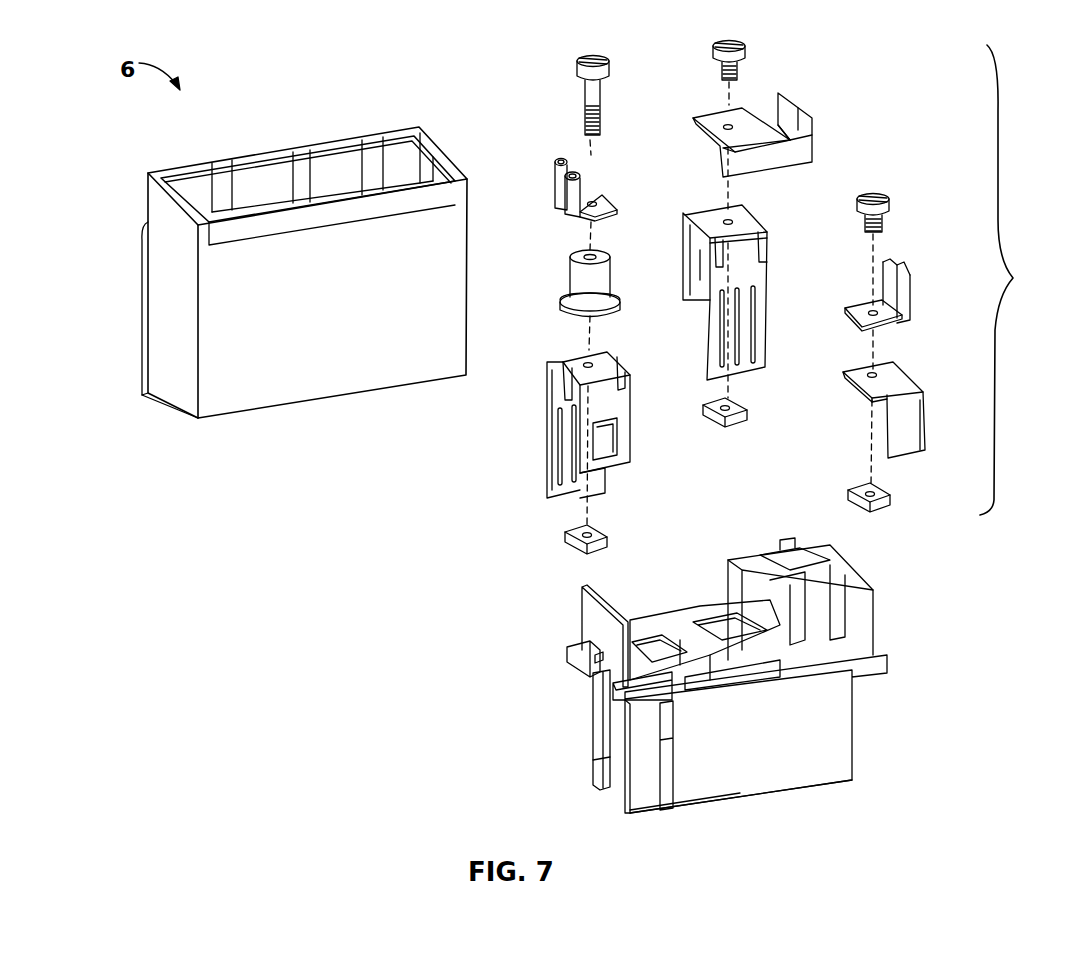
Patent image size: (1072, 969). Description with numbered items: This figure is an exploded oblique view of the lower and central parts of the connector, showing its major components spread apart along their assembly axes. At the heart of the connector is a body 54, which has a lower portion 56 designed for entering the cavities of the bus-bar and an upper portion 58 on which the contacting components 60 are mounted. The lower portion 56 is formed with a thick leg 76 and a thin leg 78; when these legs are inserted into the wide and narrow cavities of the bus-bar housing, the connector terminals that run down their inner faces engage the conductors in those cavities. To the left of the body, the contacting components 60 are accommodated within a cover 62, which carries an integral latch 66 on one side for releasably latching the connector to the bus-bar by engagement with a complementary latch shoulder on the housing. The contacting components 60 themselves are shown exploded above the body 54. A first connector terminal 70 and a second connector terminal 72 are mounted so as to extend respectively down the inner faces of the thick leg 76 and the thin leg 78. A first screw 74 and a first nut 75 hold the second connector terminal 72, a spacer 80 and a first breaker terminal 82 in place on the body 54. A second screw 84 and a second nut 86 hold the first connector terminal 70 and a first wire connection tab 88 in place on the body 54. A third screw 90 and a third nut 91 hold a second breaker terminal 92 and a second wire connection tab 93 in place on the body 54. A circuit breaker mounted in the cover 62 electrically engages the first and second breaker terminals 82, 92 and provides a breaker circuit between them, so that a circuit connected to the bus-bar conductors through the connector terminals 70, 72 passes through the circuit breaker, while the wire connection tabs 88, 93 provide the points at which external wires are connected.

The body 54 is at (866, 697).
The lower portion 56 is at (588, 714).
The upper portion 58 is at (562, 659).
The contacting components 60 is at (1014, 280).
The cover 62 is at (157, 312).
The latch 66 is at (145, 385).
The first connector terminal 70 is at (712, 334).
The second connector terminal 72 is at (547, 418).
The first screw 74 is at (588, 92).
The first nut 75 is at (567, 543).
The thick leg 76 is at (593, 767).
The thin leg 78 is at (625, 798).
The spacer 80 is at (578, 275).
The first breaker terminal 82 is at (557, 172).
The second screw 84 is at (748, 55).
The second nut 86 is at (705, 415).
The first wire connection tab 88 is at (803, 137).
The third screw 90 is at (884, 222).
The third nut 91 is at (889, 503).
The second breaker terminal 92 is at (905, 295).
The second wire connection tab 93 is at (913, 435).